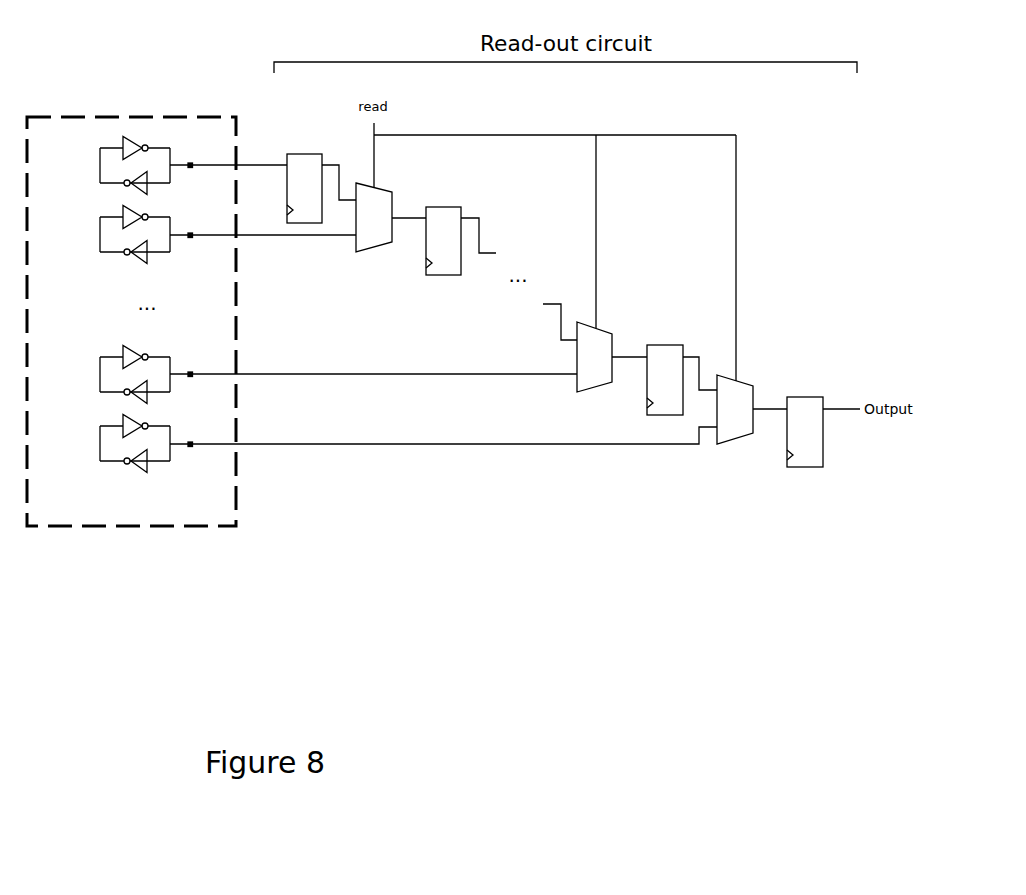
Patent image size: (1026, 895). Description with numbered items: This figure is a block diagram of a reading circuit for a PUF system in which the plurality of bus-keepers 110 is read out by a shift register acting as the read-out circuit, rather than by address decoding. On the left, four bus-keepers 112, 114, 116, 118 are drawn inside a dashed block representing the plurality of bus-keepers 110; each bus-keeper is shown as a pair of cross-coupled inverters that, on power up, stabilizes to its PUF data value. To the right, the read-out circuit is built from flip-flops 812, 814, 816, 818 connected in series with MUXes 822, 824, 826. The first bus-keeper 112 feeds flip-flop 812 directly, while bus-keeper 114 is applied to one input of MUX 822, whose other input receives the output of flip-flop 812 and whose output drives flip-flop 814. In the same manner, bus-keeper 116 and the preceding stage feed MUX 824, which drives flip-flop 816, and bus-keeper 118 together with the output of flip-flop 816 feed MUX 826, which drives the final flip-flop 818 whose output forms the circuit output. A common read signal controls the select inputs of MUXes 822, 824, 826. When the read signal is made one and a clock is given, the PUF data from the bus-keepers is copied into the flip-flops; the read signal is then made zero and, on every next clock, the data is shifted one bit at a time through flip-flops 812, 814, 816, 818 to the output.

The plurality of bus-keepers 110 is at (220, 489).
The bus-keeper 112 is at (158, 166).
The bus-keeper 114 is at (195, 235).
The bus-keeper 116 is at (307, 375).
The bus-keeper 118 is at (377, 444).
The flip-flop 812 is at (305, 213).
The flip-flop 814 is at (445, 265).
The flip-flop 816 is at (673, 357).
The flip-flop 818 is at (808, 452).
The MUX 822 is at (378, 214).
The MUX 824 is at (590, 358).
The MUX 826 is at (725, 384).